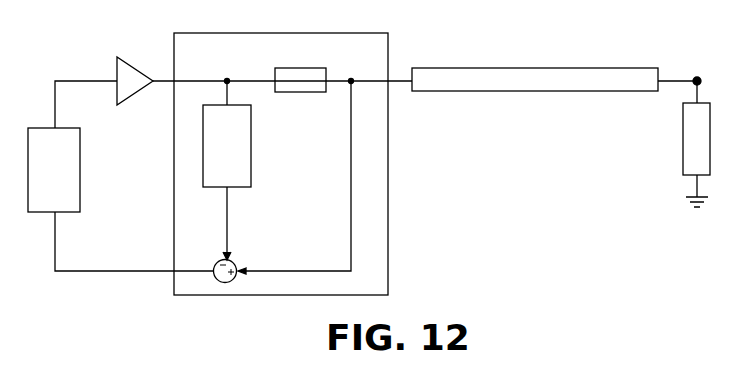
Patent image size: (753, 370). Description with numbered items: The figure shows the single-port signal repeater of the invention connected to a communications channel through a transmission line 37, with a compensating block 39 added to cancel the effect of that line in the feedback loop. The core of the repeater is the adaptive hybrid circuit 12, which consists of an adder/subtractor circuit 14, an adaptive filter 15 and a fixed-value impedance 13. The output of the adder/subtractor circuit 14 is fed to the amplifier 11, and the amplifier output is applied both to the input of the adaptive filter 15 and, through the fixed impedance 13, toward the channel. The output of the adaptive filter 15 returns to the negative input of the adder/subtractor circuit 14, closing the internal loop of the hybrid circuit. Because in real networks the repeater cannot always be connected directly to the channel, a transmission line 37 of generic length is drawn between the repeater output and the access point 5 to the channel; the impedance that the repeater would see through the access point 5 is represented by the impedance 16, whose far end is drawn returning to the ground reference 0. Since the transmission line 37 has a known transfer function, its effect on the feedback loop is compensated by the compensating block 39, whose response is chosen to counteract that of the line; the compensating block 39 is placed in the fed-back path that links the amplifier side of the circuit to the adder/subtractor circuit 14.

The adaptive hybrid circuit 12 is at (294, 164).
The compensating block 39 is at (54, 170).
The amplifier 11 is at (134, 81).
The fixed-value impedance 13 is at (300, 80).
The adaptive filter 15 is at (227, 134).
The adder/subtractor circuit 14 is at (219, 235).
The transmission line 37 is at (535, 80).
The access point 5 is at (703, 73).
The impedance 16 is at (696, 139).
The ground 0 is at (699, 208).